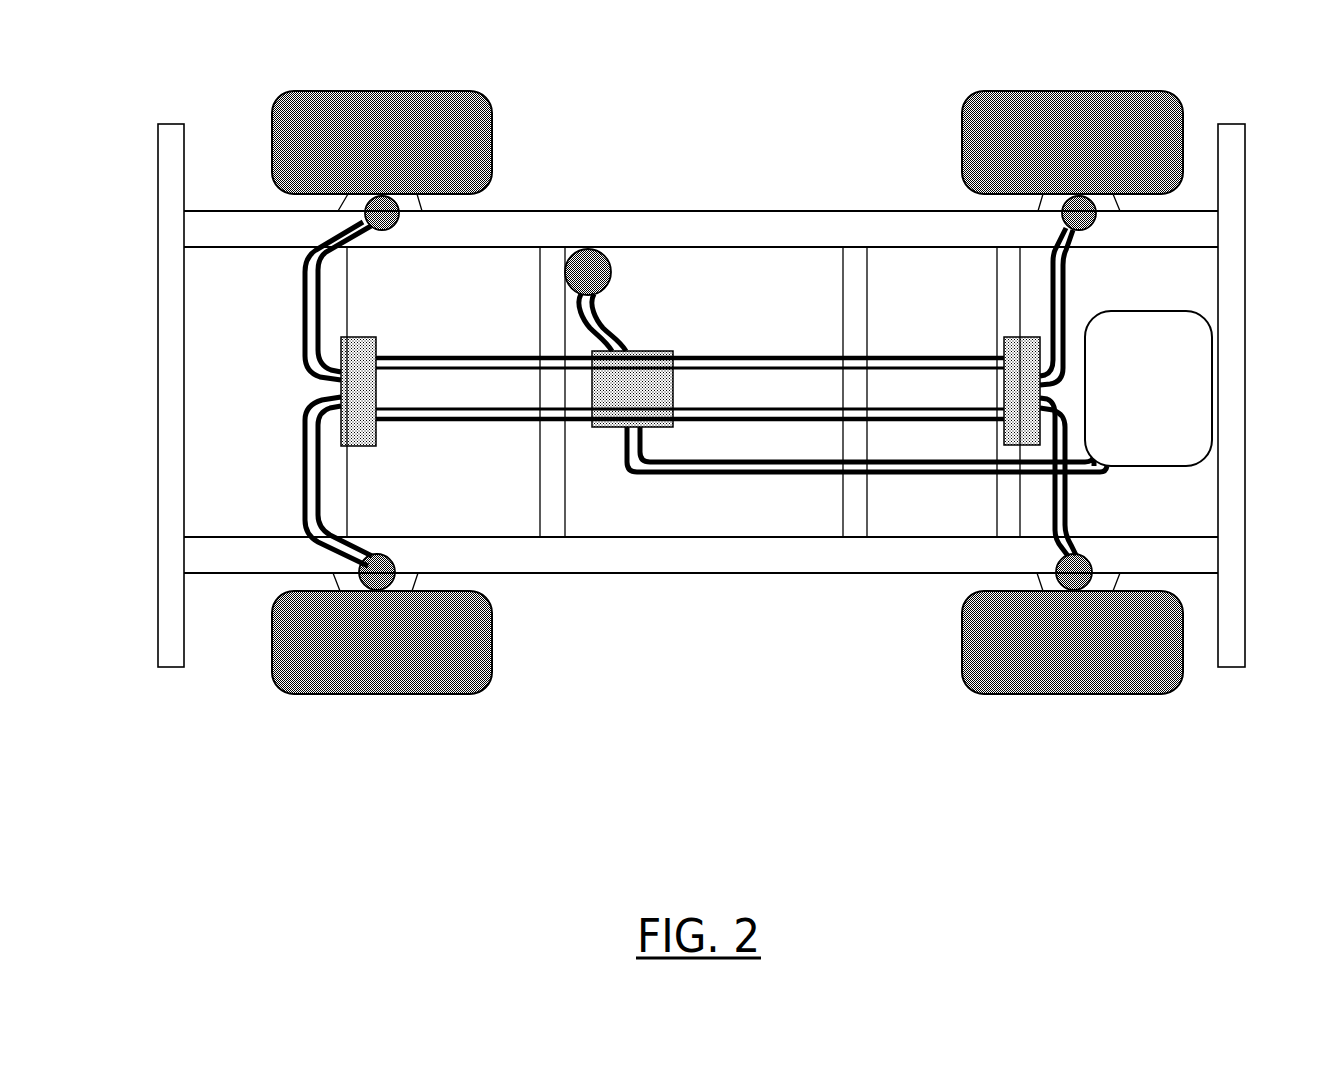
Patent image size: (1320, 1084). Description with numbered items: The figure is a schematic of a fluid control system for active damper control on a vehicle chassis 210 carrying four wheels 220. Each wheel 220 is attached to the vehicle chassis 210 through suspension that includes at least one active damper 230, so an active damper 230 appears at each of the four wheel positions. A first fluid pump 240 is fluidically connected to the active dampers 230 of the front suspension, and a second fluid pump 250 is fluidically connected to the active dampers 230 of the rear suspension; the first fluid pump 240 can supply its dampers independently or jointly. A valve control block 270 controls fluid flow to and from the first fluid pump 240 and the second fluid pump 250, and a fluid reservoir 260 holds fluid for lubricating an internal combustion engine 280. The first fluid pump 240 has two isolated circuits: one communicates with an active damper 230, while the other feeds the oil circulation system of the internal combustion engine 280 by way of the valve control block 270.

The vehicle chassis 210 is at (677, 213).
The wheel 220 is at (398, 122).
The active damper 230 is at (394, 226).
The first fluid pump 240 is at (373, 349).
The second fluid pump 250 is at (1003, 337).
The fluid reservoir 260 is at (601, 291).
The valve control block 270 is at (610, 427).
The internal combustion engine 280 is at (1174, 401).